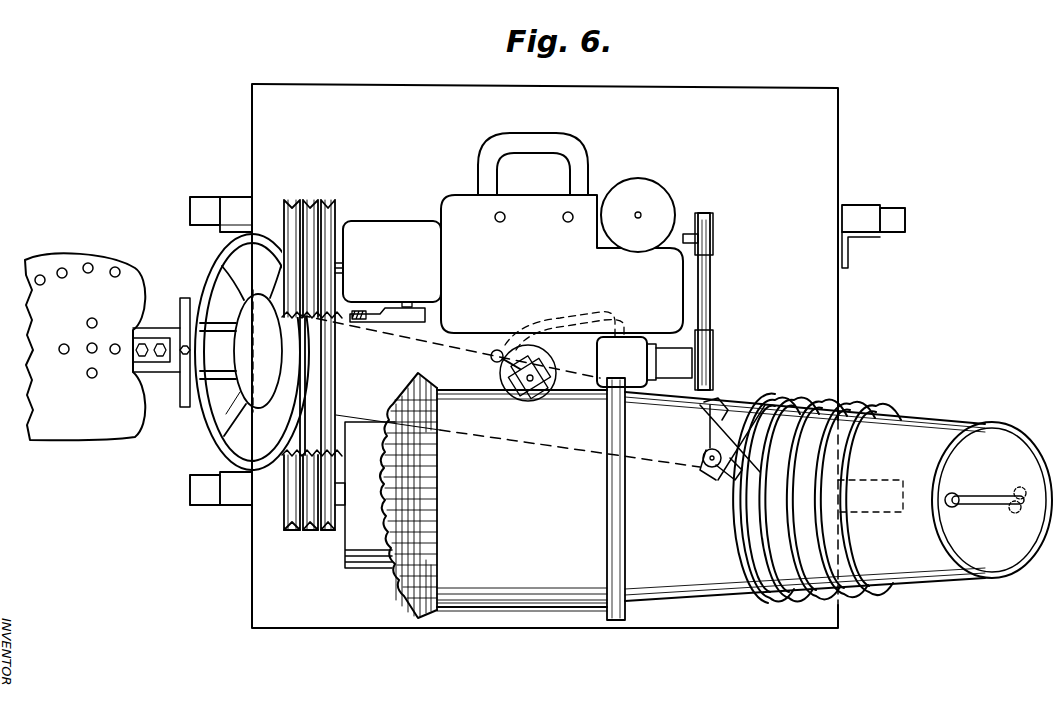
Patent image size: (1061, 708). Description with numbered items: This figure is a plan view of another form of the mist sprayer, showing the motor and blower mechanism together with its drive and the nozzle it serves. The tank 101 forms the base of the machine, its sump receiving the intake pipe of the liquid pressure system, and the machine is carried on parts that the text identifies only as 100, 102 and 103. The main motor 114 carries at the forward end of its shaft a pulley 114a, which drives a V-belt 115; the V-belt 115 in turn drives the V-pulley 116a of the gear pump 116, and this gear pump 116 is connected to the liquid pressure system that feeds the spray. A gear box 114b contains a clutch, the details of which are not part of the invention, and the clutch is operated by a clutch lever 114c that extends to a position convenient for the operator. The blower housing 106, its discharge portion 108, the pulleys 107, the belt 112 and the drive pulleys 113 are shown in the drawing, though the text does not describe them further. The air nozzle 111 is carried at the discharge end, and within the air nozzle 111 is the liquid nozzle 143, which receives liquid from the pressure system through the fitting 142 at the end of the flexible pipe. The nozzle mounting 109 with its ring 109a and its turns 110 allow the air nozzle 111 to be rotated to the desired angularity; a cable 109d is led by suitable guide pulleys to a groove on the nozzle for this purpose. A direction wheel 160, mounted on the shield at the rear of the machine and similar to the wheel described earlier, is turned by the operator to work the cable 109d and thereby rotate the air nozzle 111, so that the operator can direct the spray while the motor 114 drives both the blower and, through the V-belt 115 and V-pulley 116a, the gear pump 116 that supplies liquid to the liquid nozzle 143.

The bolts 100 is at (196, 206).
The tank 101 is at (285, 627).
The bracket 102 is at (229, 252).
The clamp block 103 is at (222, 206).
The drum 106 is at (484, 608).
The pulley grooves 107 is at (322, 534).
The drum shell 108 is at (690, 616).
The helical coil 109 is at (770, 396).
The coil end loop 109a is at (808, 400).
The cable 109d is at (796, 402).
The coil turns 110 is at (872, 414).
The air nozzle 111 is at (961, 424).
The control cable 112 is at (310, 432).
The pulleys 113 is at (327, 200).
The motor 114 is at (460, 202).
The pulley 114a is at (715, 237).
The gear box 114b is at (384, 228).
The clutch lever 114c is at (406, 323).
The V-belt 115 is at (712, 302).
The gear pump 116 is at (657, 338).
The V-pulley 116a is at (714, 342).
The fitting 142 is at (1018, 488).
The liquid nozzle 143 is at (955, 494).
The direction wheel 160 is at (215, 277).